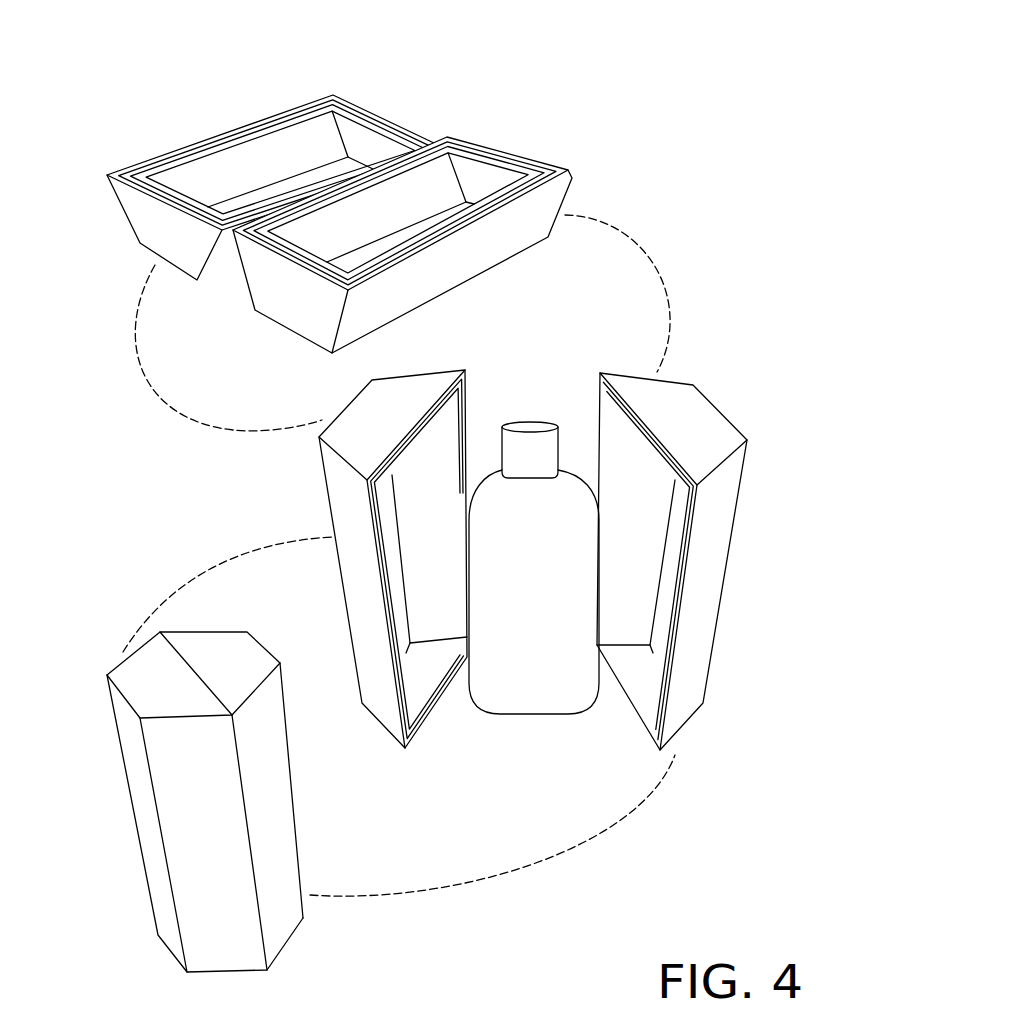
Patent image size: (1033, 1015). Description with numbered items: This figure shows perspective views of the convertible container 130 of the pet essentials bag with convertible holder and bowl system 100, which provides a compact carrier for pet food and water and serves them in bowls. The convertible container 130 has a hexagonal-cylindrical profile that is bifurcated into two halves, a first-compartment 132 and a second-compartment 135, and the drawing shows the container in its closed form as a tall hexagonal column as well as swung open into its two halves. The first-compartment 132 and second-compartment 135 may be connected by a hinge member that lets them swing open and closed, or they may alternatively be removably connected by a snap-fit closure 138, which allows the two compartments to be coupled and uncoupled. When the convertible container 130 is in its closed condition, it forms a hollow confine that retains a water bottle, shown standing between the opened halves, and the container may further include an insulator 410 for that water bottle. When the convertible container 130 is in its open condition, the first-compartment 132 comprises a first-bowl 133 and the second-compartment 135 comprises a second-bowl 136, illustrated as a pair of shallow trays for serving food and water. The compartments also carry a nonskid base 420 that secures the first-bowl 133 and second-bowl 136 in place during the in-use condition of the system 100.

The pet essentials bag with convertible holder and bowl system 100 is at (553, 103).
The convertible container 130 is at (220, 837).
The first-compartment 132 is at (355, 132).
The first-bowl 133 is at (362, 110).
The second-compartment 135 is at (298, 318).
The second-bowl 136 is at (305, 300).
The snap-fit closure 138 is at (683, 558).
The insulator 410 is at (637, 688).
The nonskid base 420 is at (155, 850).